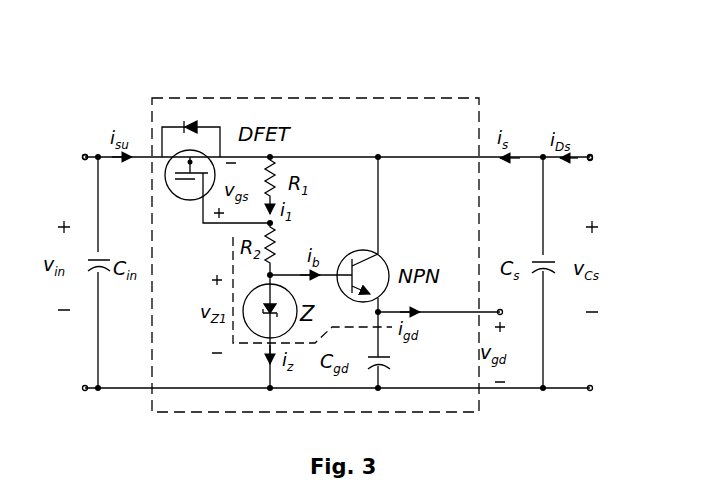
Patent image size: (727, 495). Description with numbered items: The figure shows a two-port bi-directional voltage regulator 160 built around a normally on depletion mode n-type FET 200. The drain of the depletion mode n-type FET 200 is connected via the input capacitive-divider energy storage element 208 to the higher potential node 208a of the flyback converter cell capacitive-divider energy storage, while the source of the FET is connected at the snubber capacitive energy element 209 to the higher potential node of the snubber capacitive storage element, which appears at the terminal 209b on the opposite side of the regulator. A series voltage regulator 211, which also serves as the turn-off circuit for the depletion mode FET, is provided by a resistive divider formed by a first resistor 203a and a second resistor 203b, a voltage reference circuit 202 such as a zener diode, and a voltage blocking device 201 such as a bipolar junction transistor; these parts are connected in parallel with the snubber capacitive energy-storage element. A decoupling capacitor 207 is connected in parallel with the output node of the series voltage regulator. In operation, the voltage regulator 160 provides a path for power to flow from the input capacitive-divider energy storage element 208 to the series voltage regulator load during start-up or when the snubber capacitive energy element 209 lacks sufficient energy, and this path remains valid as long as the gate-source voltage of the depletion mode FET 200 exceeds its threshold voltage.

The two-port bi-directional voltage regulator 160 is at (148, 97).
The depletion mode n-type FET 200 is at (205, 110).
The higher potential node 208a is at (54, 158).
The output terminal 209b is at (619, 158).
The resistor R1 203a is at (363, 205).
The resistor R2 203b is at (228, 263).
The voltage reference circuit Z 202 is at (251, 340).
The voltage blocking device 201 is at (389, 242).
The series voltage regulator 211 is at (386, 218).
The decoupling capacitor 207 is at (443, 363).
The input capacitive-divider energy storage element 208 is at (117, 285).
The snubber capacitive energy element 209 is at (562, 293).